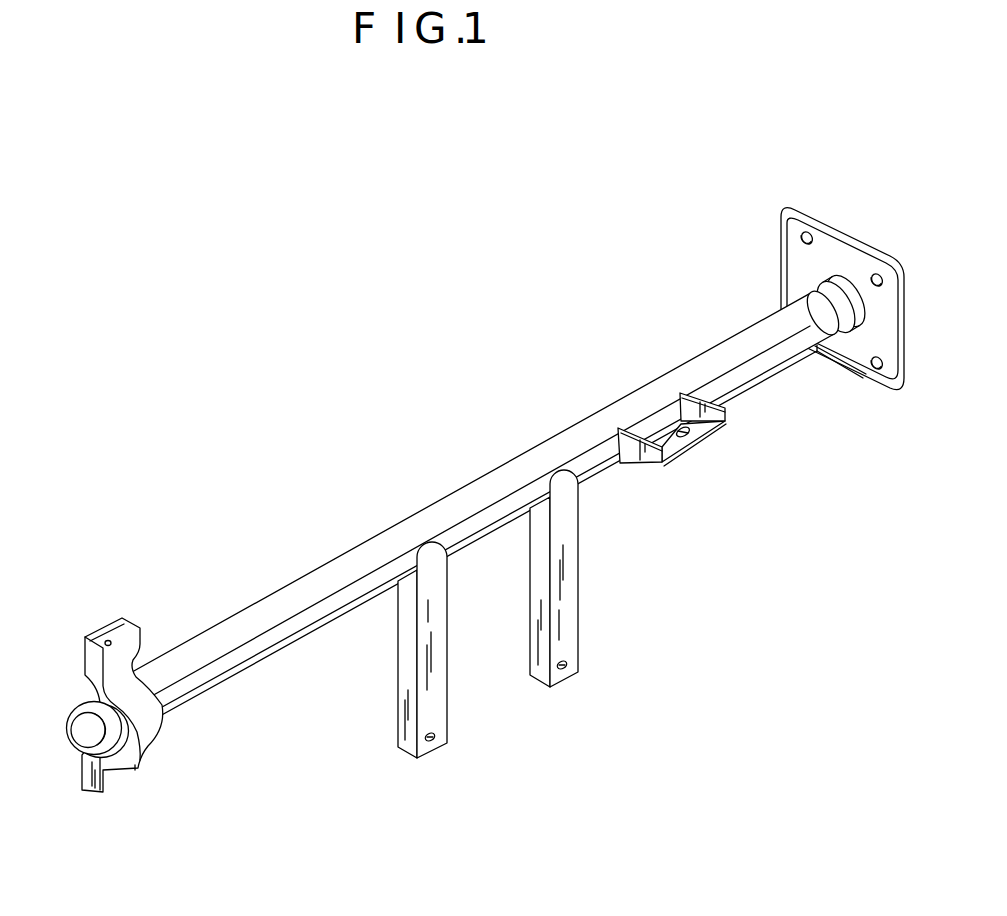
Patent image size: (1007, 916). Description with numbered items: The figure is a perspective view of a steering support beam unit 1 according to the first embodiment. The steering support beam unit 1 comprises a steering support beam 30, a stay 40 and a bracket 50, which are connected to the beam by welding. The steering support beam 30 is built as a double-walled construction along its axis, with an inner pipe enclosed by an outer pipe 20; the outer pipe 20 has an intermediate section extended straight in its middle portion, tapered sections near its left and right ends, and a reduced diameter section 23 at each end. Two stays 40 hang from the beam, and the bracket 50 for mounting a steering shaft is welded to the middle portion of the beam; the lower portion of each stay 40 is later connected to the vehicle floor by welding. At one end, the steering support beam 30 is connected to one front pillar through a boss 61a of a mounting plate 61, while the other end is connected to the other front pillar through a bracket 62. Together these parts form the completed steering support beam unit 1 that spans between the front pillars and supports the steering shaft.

The steering support beam unit 1 is at (368, 368).
The outer pipe 20 is at (291, 595).
The reduced diameter section 23 is at (72, 748).
The steering support beam 30 is at (458, 488).
The stay 40 is at (404, 691).
The bracket 50 is at (712, 438).
The mounting plate 61 is at (852, 233).
The boss 61a is at (857, 336).
The bracket 62 is at (113, 617).